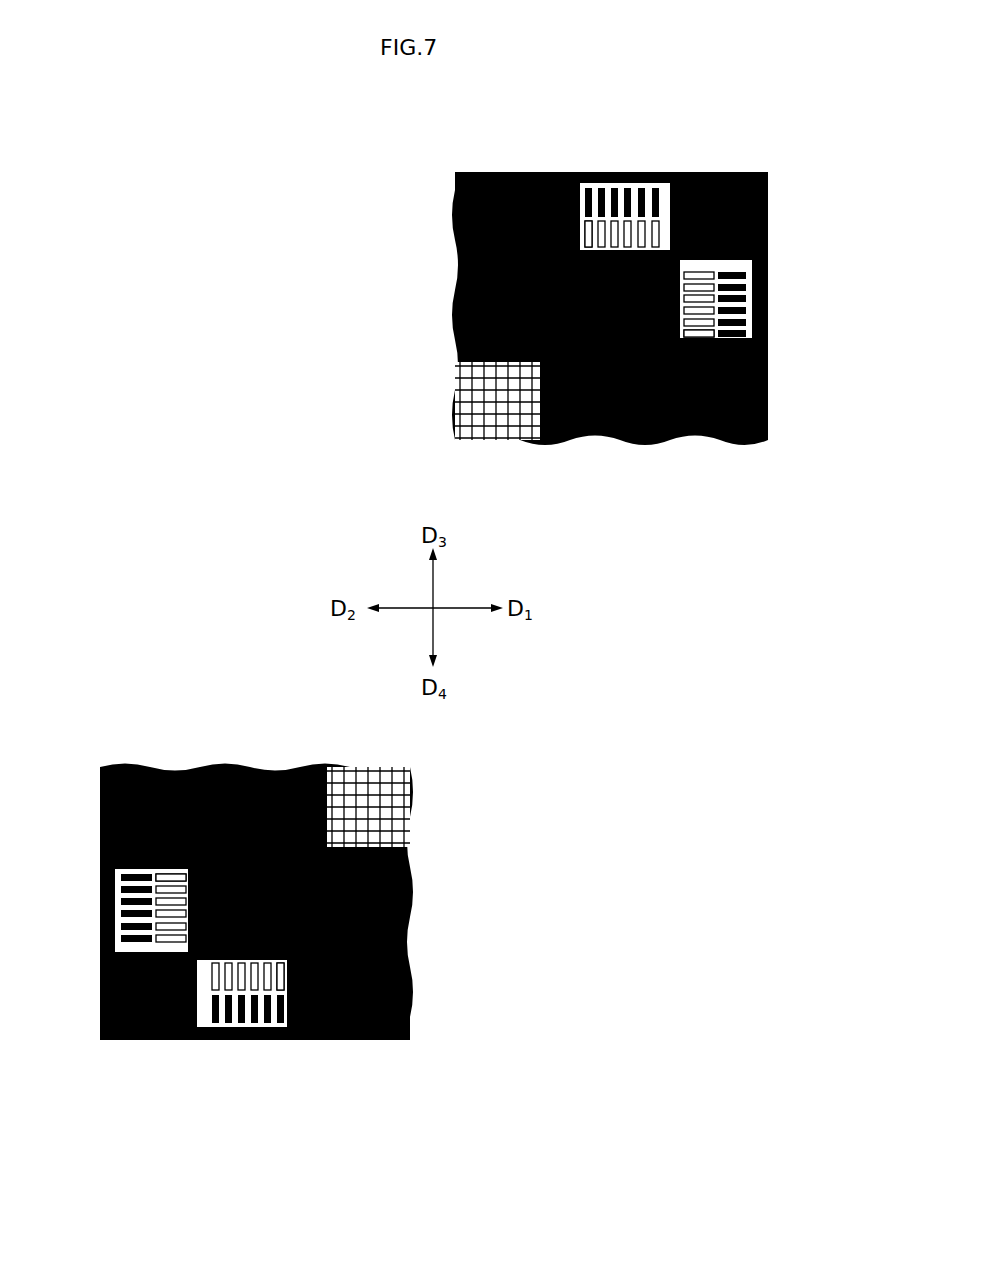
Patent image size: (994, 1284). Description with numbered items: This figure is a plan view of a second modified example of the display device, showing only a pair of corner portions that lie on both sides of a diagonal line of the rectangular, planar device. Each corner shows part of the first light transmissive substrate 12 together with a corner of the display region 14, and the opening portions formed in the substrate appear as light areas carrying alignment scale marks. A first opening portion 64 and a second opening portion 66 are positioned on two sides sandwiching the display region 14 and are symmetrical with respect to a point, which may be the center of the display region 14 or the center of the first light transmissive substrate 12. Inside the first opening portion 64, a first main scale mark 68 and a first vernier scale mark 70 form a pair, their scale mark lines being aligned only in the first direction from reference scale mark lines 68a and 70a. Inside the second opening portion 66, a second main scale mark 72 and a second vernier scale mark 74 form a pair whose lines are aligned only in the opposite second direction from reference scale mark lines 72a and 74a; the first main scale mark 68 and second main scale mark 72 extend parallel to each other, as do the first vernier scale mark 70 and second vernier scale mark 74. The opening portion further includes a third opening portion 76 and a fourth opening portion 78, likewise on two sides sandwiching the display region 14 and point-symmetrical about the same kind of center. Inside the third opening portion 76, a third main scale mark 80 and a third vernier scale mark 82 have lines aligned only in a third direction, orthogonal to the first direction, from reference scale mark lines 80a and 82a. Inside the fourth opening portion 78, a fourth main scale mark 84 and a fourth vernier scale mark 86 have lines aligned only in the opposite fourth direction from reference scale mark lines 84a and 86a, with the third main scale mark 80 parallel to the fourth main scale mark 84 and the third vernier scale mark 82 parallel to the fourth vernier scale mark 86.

The first light transmissive substrate 12 is at (780, 385).
The display region 14 is at (482, 410).
The first opening portion 64 is at (622, 186).
The second opening portion 66 is at (247, 1028).
The first main scale mark 68 is at (674, 199).
The reference scale mark line 68a is at (589, 182).
The first vernier scale mark 70 is at (674, 232).
The reference scale mark line 70a is at (588, 248).
The second main scale mark 72 is at (191, 1010).
The reference scale mark line 72a is at (280, 1027).
The second vernier scale mark 74 is at (188, 981).
The reference scale mark line 74a is at (281, 960).
The third opening portion 76 is at (754, 292).
The fourth opening portion 78 is at (118, 920).
The third main scale mark 80 is at (740, 255).
The reference scale mark line 80a is at (756, 335).
The third vernier scale mark 82 is at (702, 256).
The reference scale mark line 82a is at (684, 336).
The fourth main scale mark 84 is at (127, 952).
The reference scale mark line 84a is at (110, 878).
The fourth vernier scale mark 86 is at (160, 962).
The reference scale mark line 86a is at (190, 877).